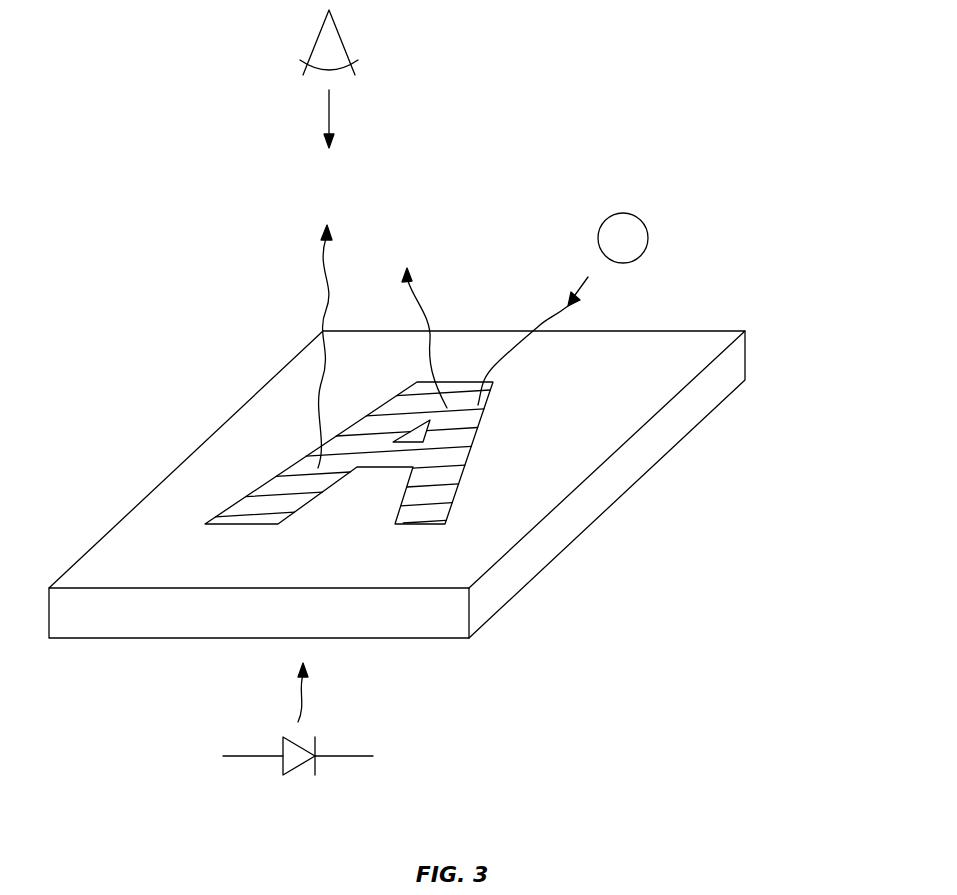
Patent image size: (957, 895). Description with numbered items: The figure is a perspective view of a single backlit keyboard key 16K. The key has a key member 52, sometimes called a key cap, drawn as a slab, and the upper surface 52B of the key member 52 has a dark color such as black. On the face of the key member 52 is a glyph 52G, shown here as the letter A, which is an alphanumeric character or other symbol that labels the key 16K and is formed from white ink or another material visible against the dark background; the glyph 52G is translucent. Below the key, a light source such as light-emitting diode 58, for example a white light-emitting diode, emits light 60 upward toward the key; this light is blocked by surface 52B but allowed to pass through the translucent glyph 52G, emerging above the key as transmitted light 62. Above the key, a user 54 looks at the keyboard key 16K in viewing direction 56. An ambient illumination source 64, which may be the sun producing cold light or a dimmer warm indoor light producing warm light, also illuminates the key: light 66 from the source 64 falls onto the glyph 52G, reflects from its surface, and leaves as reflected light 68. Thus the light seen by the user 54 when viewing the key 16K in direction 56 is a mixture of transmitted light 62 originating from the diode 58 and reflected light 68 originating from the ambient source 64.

The keyboard key 16K is at (786, 350).
The key member 52 is at (615, 502).
The surface of key member 52B is at (683, 347).
The glyph 52G is at (453, 452).
The user 54 is at (338, 35).
The viewing direction 56 is at (329, 115).
The light-emitting diode 58 is at (290, 773).
The light 60 is at (302, 700).
The transmitted light 62 is at (318, 282).
The ambient illumination source 64 is at (628, 225).
The light from ambient light source 66 is at (545, 318).
The reflected light 68 is at (417, 295).